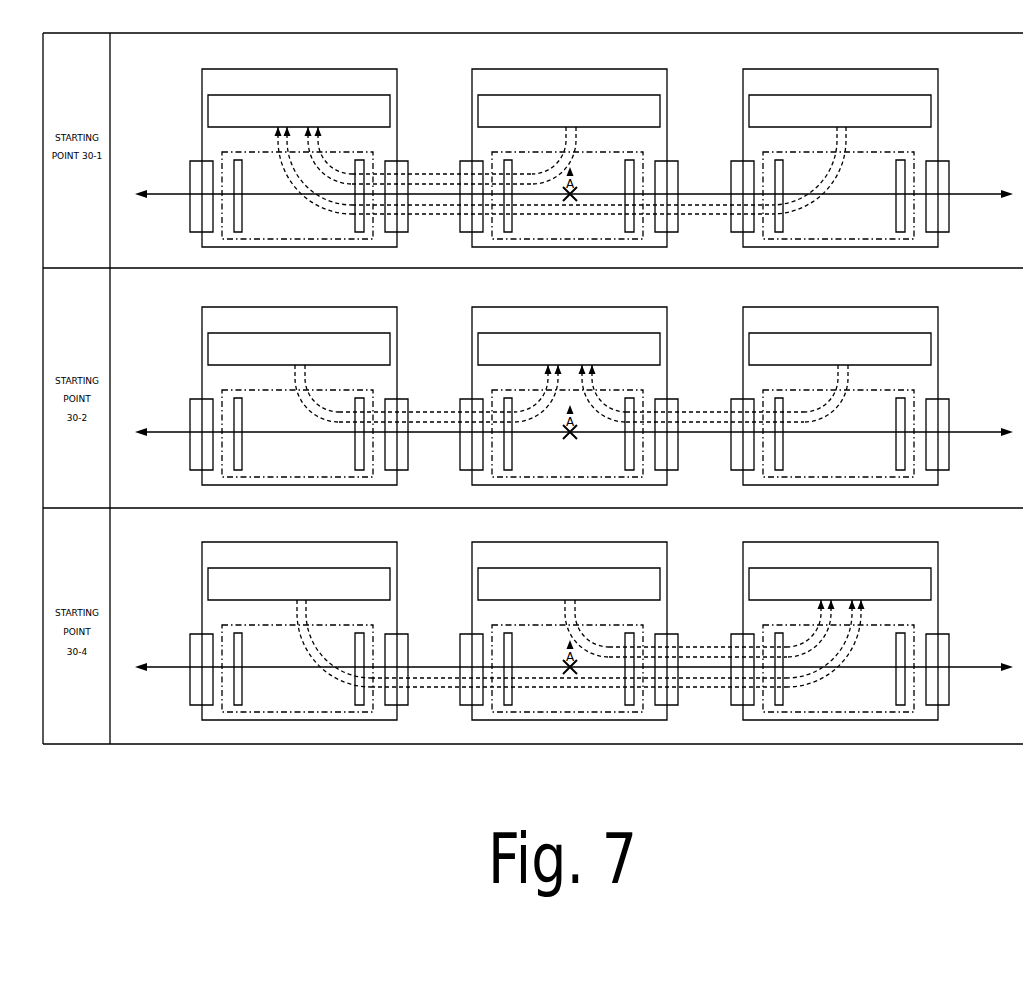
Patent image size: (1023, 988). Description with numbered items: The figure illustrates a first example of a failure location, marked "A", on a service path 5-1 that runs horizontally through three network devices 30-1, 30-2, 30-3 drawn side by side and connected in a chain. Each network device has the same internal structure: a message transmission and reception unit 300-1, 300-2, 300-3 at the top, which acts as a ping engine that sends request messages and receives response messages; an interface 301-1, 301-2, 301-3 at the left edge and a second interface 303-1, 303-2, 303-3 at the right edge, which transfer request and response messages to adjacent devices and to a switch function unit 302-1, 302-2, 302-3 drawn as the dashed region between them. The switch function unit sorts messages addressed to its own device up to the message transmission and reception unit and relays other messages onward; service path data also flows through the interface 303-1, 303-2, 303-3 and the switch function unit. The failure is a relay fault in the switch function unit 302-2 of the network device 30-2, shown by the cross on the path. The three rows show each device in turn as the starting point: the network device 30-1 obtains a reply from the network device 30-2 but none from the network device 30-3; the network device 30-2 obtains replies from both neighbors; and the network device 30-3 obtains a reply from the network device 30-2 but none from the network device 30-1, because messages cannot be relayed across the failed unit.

The network device 30-1 is at (329, 69).
The network device 30-2 is at (599, 69).
The network device 30-3 is at (870, 69).
The message transmission and reception unit 300-1 is at (300, 95).
The message transmission and reception unit 300-2 is at (570, 95).
The message transmission and reception unit 300-3 is at (843, 95).
The interface 301-1 is at (191, 163).
The interface 301-2 is at (461, 163).
The interface 301-3 is at (732, 163).
The switch function unit 302-1 is at (238, 150).
The switch function unit 302-2 is at (508, 150).
The switch function unit 302-3 is at (780, 150).
The interface 303-1 is at (407, 232).
The interface 303-2 is at (677, 232).
The interface 303-3 is at (940, 161).
The service path 5-1 is at (975, 194).